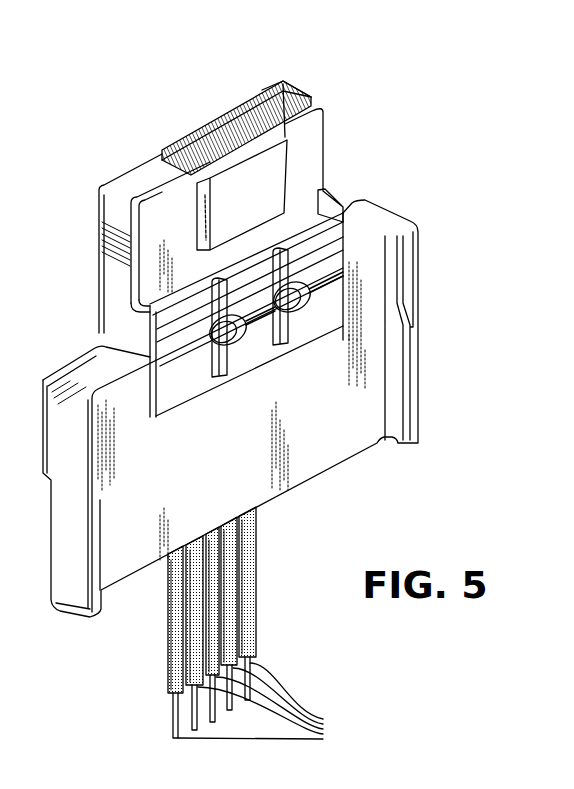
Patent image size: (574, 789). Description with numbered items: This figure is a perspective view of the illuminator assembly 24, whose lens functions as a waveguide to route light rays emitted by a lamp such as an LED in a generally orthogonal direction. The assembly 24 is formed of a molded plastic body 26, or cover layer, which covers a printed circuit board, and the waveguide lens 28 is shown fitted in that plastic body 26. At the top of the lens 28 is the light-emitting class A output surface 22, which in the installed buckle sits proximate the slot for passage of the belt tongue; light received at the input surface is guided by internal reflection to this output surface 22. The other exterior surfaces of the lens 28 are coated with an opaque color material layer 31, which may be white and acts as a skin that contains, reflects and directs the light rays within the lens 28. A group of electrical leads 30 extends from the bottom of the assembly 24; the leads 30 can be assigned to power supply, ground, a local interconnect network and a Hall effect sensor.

The light-emitting class A surface 22 is at (283, 143).
The illuminator assembly 24 is at (428, 208).
The plastic body 26 is at (413, 377).
The waveguide lens 28 is at (250, 126).
The electrical leads 30 is at (260, 624).
The opaque color material layer 31 is at (290, 87).